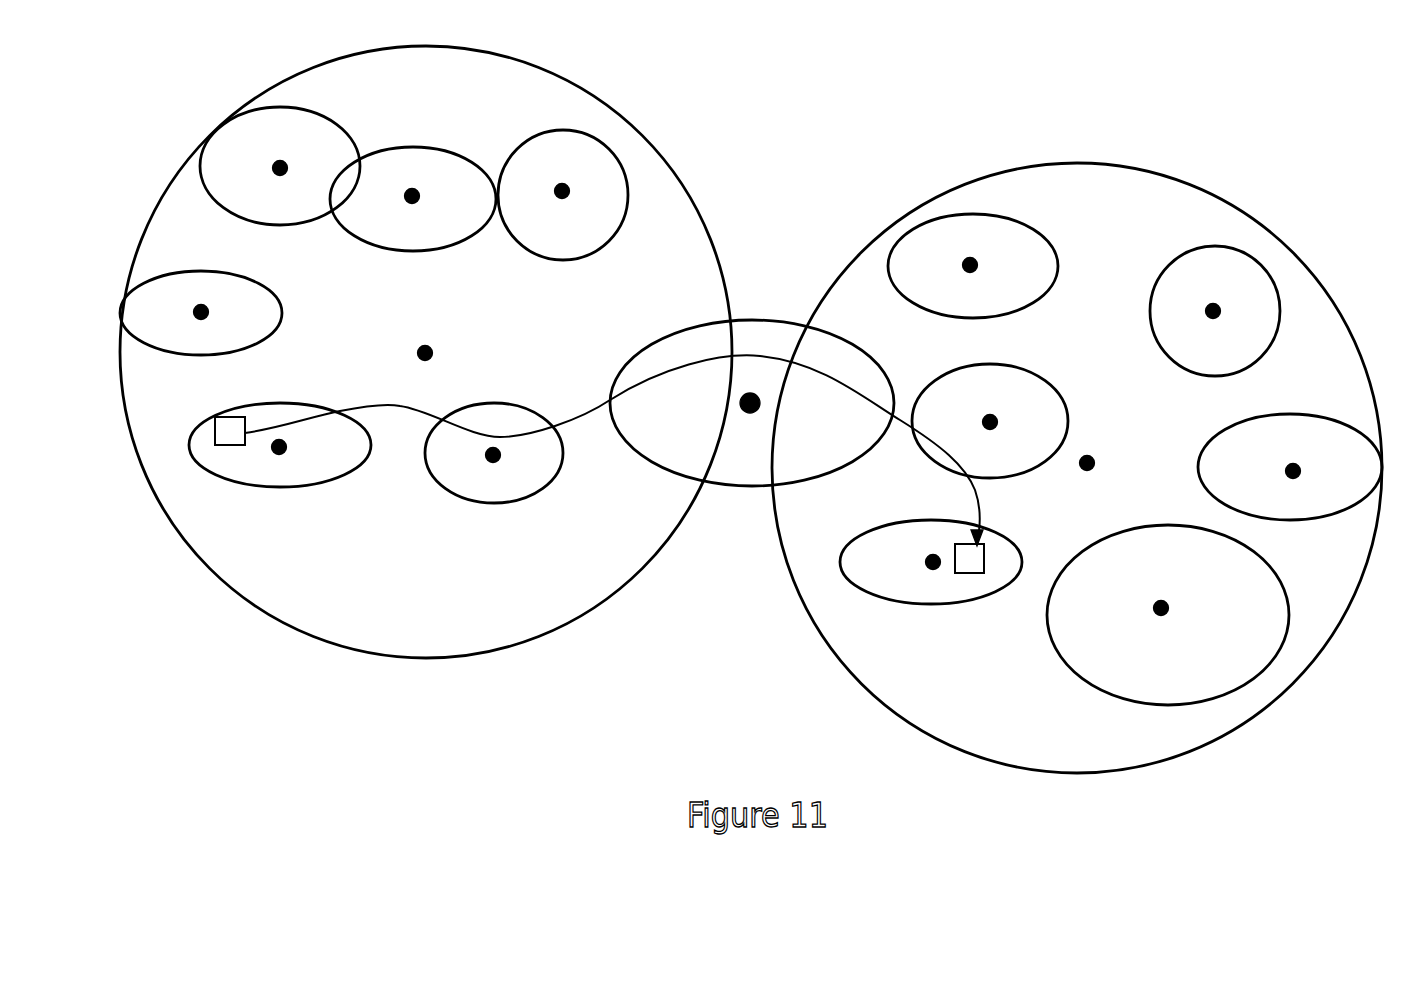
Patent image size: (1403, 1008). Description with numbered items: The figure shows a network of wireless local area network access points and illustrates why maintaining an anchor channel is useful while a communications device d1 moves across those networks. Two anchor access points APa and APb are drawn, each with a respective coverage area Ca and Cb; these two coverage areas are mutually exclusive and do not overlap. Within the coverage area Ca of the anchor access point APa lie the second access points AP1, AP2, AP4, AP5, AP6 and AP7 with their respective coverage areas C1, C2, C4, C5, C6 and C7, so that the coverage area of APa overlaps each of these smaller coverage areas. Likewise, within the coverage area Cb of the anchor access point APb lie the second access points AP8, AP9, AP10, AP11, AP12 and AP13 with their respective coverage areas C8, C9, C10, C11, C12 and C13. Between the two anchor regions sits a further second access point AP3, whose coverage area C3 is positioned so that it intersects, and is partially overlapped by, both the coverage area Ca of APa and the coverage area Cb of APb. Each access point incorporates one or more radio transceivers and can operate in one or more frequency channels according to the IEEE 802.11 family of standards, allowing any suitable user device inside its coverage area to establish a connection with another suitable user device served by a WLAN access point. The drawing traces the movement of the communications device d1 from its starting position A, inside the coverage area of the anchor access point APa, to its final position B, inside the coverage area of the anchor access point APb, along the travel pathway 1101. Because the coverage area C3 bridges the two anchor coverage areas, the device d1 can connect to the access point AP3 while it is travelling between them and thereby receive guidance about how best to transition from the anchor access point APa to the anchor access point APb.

The coverage area Ca is at (663, 158).
The coverage area Cb is at (921, 205).
The coverage area C1 is at (282, 403).
The coverage area C2 is at (501, 403).
The coverage area C3 is at (740, 490).
The coverage area C4 is at (548, 130).
The coverage area C5 is at (428, 147).
The coverage area C6 is at (331, 118).
The coverage area C7 is at (204, 272).
The coverage area C8 is at (1020, 220).
The coverage area C9 is at (1030, 371).
The coverage area C10 is at (1177, 250).
The coverage area C11 is at (1299, 413).
The coverage area C12 is at (1152, 527).
The coverage area C13 is at (886, 520).
The WLAN access point AP1 is at (303, 454).
The WLAN access point AP2 is at (514, 466).
The WLAN access point AP3 is at (768, 417).
The WLAN access point AP4 is at (572, 209).
The WLAN access point AP5 is at (435, 199).
The WLAN access point AP6 is at (260, 167).
The WLAN access point AP7 is at (219, 326).
The WLAN access point AP8 is at (997, 266).
The WLAN access point AP9 is at (970, 424).
The WLAN access point AP10 is at (1236, 325).
The WLAN access point AP11 is at (1317, 480).
The WLAN access point AP12 is at (1188, 601).
The WLAN access point AP13 is at (909, 573).
The anchor access point APa is at (442, 369).
The anchor access point APb is at (1092, 481).
The travel pathway 1101 is at (560, 420).
The communications device d1 is at (611, 479).
The starting position A is at (215, 432).
The final position B is at (988, 560).